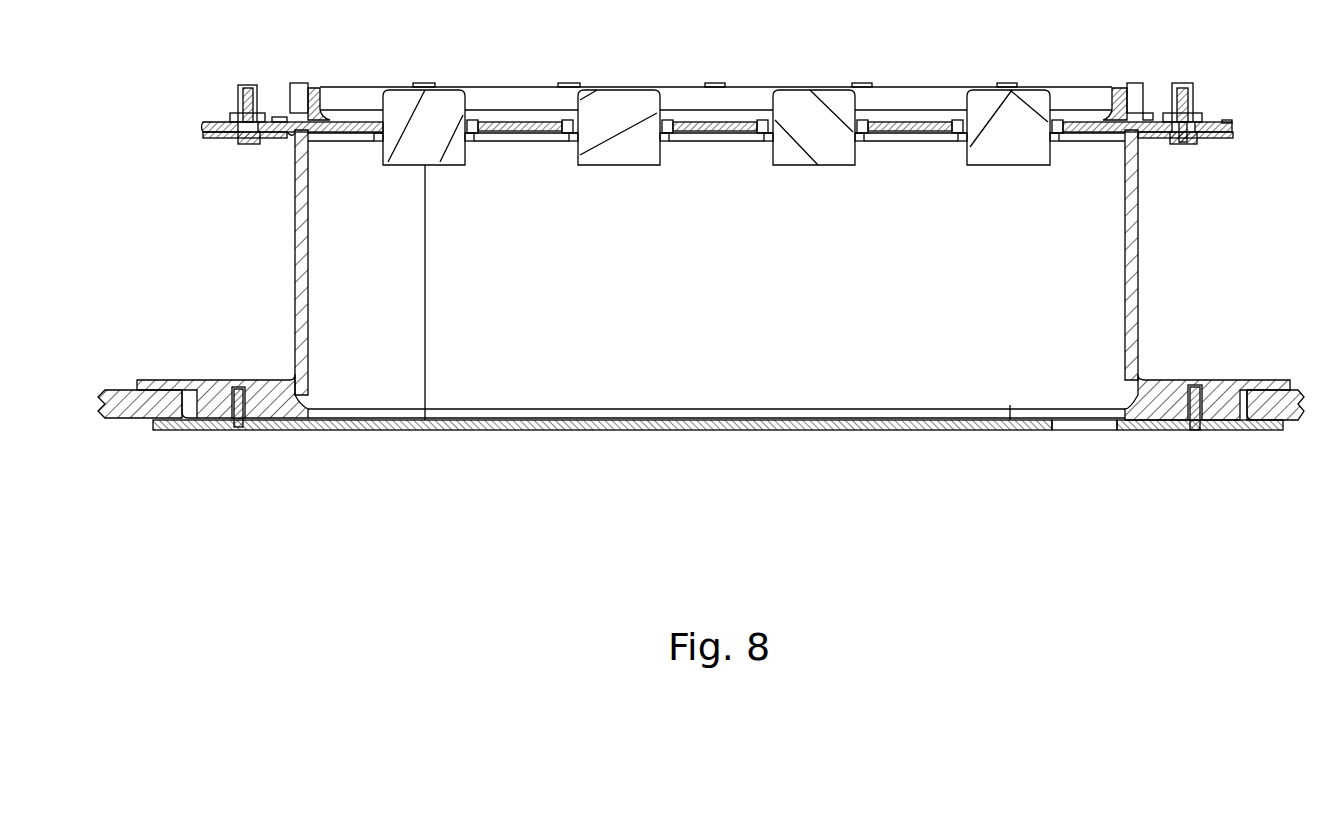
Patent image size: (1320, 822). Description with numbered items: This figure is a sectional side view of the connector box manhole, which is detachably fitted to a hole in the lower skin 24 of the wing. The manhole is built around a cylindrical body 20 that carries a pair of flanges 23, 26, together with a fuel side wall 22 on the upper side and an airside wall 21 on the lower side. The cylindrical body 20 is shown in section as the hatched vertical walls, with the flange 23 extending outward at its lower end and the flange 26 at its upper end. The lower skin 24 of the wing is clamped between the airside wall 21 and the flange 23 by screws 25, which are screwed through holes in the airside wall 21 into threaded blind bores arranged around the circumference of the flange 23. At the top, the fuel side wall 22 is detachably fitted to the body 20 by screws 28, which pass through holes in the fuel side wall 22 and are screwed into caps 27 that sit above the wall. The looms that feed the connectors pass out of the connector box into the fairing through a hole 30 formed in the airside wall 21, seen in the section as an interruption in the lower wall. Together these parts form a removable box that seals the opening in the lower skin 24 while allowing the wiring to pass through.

The cylindrical body 20 is at (297, 255).
The airside wall 21 is at (378, 430).
The fuel side wall 22 is at (225, 118).
The flange 23 is at (195, 380).
The lower skin 24 is at (125, 420).
The screws 25 is at (238, 427).
The flange 26 is at (1215, 136).
The caps 27 is at (1180, 85).
The screws 28 is at (1183, 143).
The hole 30 is at (1057, 430).